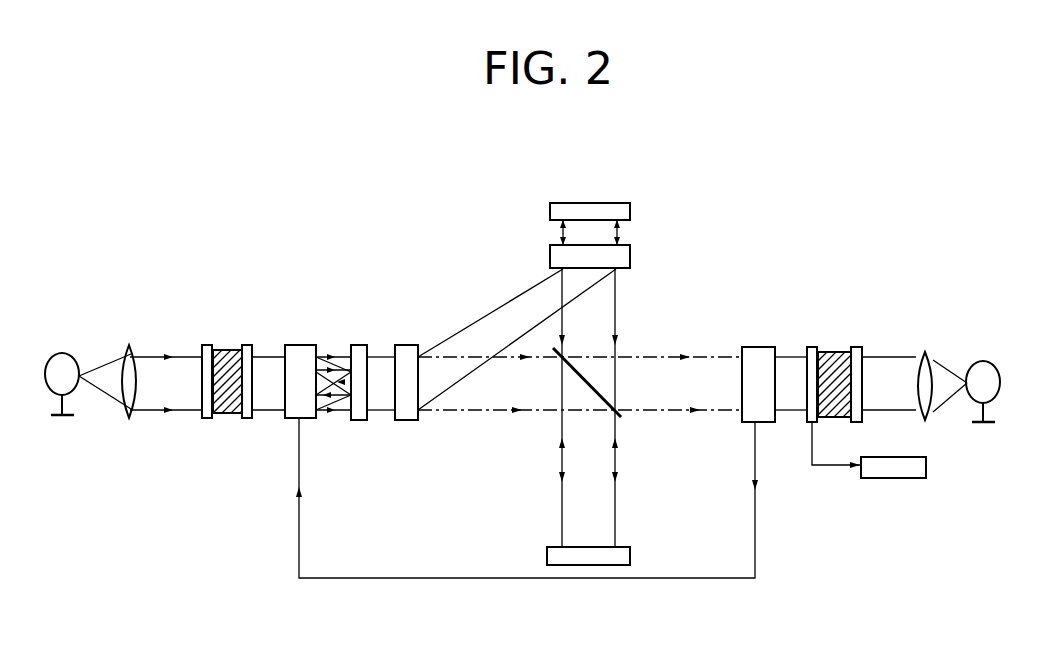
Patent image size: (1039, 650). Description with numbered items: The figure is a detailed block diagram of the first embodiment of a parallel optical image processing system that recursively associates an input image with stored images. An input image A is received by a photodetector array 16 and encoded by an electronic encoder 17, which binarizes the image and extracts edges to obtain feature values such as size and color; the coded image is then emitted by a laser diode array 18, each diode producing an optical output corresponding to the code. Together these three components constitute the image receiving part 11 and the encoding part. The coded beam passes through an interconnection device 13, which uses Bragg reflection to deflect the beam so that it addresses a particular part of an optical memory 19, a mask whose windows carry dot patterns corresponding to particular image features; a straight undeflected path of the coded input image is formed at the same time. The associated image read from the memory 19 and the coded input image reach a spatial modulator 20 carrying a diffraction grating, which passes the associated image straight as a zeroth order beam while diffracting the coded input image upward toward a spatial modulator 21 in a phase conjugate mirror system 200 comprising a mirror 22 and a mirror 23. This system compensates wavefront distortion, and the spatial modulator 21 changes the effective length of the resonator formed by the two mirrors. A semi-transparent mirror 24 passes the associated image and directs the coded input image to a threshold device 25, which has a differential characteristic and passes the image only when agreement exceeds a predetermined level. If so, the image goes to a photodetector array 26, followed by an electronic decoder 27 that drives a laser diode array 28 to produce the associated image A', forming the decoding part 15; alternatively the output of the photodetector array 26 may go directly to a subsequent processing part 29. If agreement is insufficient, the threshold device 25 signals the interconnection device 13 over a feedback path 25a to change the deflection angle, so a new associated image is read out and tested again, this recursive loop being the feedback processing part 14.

The image receiving part 11 is at (231, 415).
The interconnection device 13 is at (298, 345).
The feedback processing part 14 is at (568, 463).
The decoding part 15 is at (838, 417).
The photodetector array 16 is at (206, 345).
The electronic encoder 17 is at (228, 350).
The laser diode array 18 is at (251, 345).
The optical memory 19 is at (360, 345).
The spatial modulator 20 is at (407, 345).
The spatial modulator 21 is at (622, 258).
The mirror 22 is at (625, 210).
The mirror 23 is at (632, 555).
The semi-transparent mirror 24 is at (603, 392).
The threshold device 25 is at (760, 347).
The feedback path 25a is at (756, 562).
The photodetector array 26 is at (812, 347).
The electronic decoder 27 is at (835, 352).
The laser diode array 28 is at (857, 347).
The subsequent processing part 29 is at (897, 479).
The phase conjugate mirror system 200 is at (630, 203).
The input image A is at (62, 399).
The associated image A' is at (983, 405).